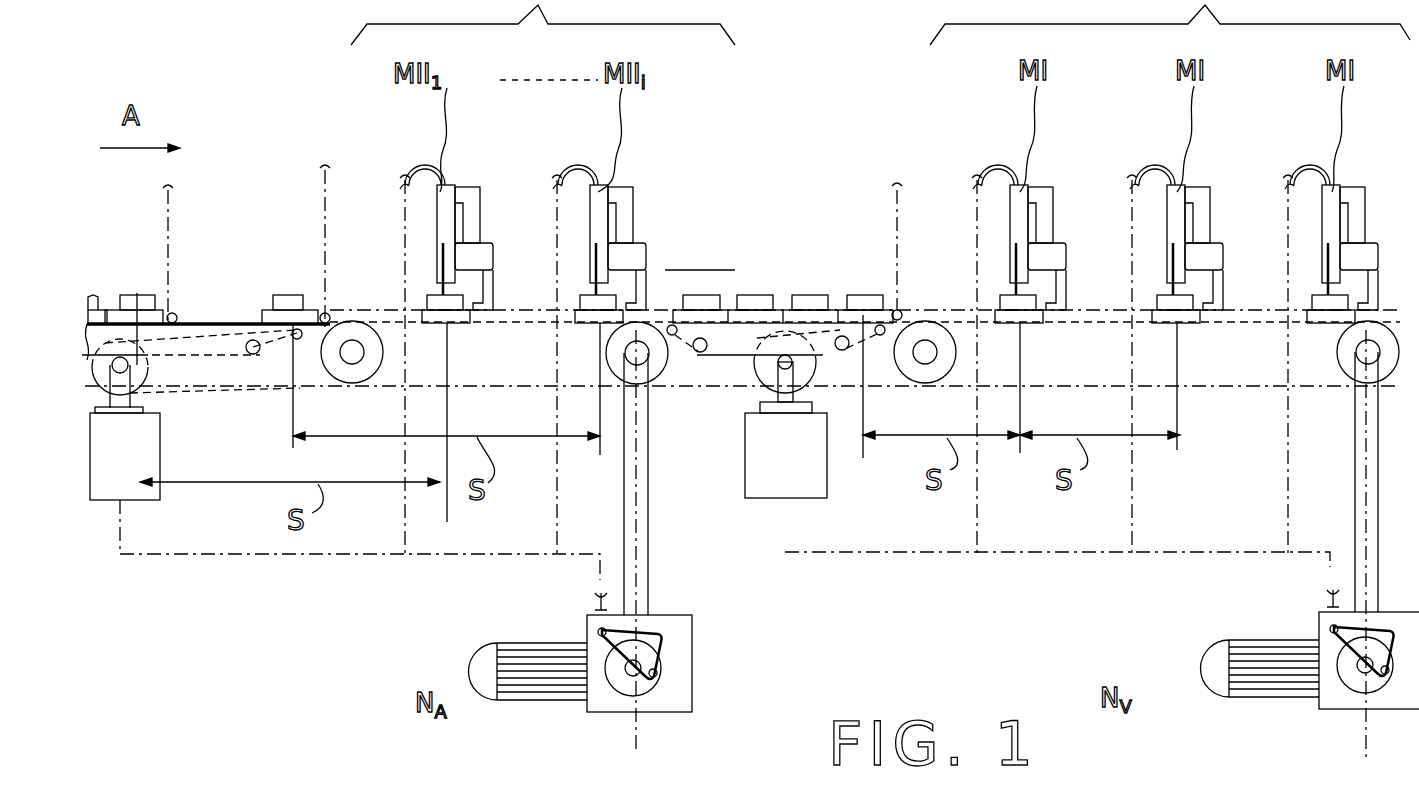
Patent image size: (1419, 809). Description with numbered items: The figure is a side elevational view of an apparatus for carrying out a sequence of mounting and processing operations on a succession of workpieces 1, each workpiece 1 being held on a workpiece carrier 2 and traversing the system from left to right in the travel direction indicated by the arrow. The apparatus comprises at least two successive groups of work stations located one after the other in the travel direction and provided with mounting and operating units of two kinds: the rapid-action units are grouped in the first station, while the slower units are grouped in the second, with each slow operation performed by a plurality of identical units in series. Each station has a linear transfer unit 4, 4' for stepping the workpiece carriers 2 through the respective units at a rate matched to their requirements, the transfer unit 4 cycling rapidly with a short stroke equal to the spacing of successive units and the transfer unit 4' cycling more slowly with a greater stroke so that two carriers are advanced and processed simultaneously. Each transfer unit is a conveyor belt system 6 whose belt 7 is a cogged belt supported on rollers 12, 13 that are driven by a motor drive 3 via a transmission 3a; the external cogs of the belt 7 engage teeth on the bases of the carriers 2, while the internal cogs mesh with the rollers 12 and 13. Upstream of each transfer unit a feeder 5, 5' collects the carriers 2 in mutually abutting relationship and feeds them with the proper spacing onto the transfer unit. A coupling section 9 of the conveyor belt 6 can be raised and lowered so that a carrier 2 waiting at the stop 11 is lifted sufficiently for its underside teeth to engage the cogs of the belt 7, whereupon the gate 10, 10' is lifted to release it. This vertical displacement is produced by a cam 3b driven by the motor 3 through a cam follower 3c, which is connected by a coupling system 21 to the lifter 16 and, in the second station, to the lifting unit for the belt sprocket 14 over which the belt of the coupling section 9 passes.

The workpiece 1 is at (136, 298).
The workpiece carrier 2 is at (116, 312).
The drive 3 is at (524, 698).
The transmission 3a is at (648, 585).
The cam 3b is at (640, 692).
The cam follower 3c is at (672, 650).
The linear transfer unit 4 is at (1249, 250).
The linear transfer unit 4' is at (539, 191).
The feeder 5 is at (758, 377).
The feeder 5' is at (143, 394).
The conveyor belt system 6 is at (507, 392).
The belt 7 is at (508, 320).
The coupling section 9 is at (213, 395).
The gate 10 is at (919, 251).
The gate 10' is at (265, 245).
The gate or stop 11 is at (250, 395).
The roller 12 is at (648, 368).
The roller 13 is at (362, 340).
The belt sprocket 14 is at (103, 380).
The lifter 16 is at (128, 478).
The coupling system 21 is at (320, 557).